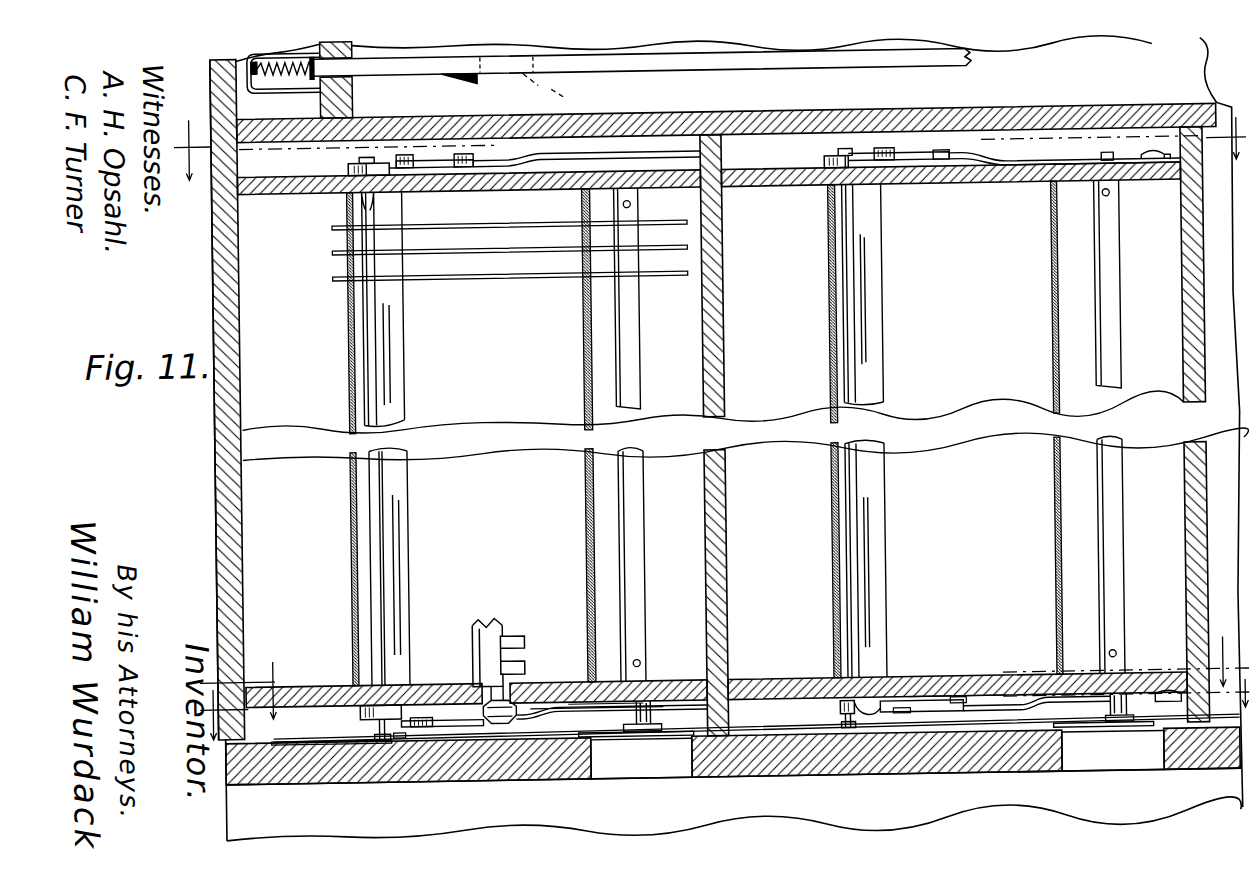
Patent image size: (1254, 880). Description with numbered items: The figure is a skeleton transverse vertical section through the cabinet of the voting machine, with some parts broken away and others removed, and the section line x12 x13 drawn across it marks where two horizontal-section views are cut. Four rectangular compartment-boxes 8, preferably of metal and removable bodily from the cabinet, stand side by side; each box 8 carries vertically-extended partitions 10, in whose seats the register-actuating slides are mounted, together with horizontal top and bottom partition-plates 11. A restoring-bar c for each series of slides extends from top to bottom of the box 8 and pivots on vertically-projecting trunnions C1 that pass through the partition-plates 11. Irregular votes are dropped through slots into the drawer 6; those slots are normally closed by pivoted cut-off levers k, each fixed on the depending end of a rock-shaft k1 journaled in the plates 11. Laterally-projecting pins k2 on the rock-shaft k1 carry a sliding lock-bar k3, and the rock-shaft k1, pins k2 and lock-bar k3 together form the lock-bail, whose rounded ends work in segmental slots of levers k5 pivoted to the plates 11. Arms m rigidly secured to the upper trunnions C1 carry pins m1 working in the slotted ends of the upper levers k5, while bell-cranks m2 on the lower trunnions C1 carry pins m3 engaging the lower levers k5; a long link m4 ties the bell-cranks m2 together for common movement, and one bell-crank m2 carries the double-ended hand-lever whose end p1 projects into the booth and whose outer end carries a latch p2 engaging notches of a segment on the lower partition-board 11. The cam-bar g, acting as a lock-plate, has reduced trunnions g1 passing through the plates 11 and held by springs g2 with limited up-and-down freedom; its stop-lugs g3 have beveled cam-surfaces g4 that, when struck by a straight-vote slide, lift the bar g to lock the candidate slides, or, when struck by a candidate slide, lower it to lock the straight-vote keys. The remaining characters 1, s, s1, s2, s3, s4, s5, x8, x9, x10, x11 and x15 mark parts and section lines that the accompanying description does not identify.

The window frame 1 is at (213, 242).
The drawer 6 is at (468, 272).
The compartment-box 8 is at (243, 338).
The vertically-extended partitions 10 is at (350, 514).
The horizontal partition-plates 11 is at (303, 190).
The restoring-bar c is at (876, 266).
The trunnions C1 is at (370, 158).
The cut-off lever k is at (614, 745).
The rock-shaft k1 is at (641, 720).
The laterally-projecting pins k2 is at (1114, 199).
The lock-bar k3 is at (1124, 280).
The levers k5 is at (553, 144).
The arms m is at (418, 158).
The pins m1 is at (467, 150).
The bell-cranks m2 is at (445, 712).
The pin m3 is at (470, 723).
The long link m4 is at (463, 736).
The hand-lever end p1 is at (278, 741).
The latch p2 is at (397, 740).
The cam-bar g is at (490, 612).
The trunnions g1 is at (494, 692).
The springs g2 is at (508, 722).
The stop-lugs g3 is at (522, 665).
The cam surface g4 is at (524, 633).
The bar s is at (918, 62).
The bar portion s1 is at (563, 93).
The wedge s2 is at (465, 80).
The spring s3 is at (294, 66).
The spring block s4 is at (358, 50).
The spring housing s5 is at (263, 70).
The section line x8 is at (248, 691).
The section line x9 is at (253, 716).
The section line x10 is at (1128, 663).
The section line x11 is at (1128, 704).
The section line x12 is at (193, 166).
The section line x13 is at (1113, 127).
The section line x15 is at (265, 150).